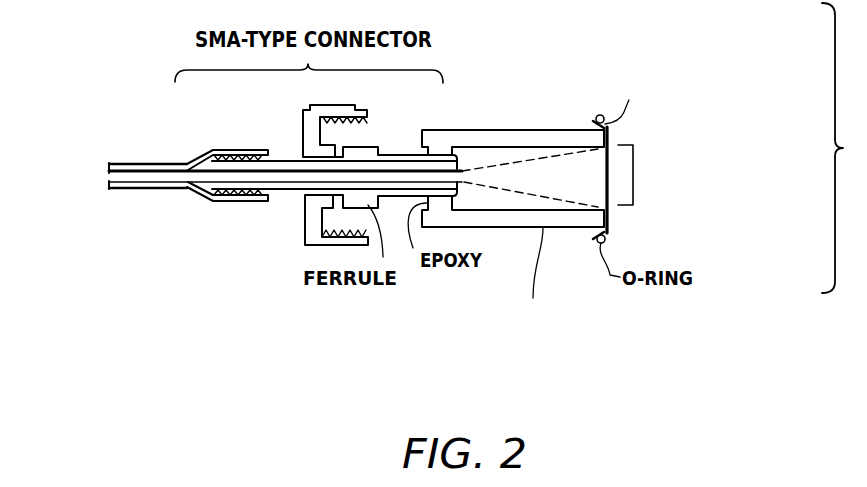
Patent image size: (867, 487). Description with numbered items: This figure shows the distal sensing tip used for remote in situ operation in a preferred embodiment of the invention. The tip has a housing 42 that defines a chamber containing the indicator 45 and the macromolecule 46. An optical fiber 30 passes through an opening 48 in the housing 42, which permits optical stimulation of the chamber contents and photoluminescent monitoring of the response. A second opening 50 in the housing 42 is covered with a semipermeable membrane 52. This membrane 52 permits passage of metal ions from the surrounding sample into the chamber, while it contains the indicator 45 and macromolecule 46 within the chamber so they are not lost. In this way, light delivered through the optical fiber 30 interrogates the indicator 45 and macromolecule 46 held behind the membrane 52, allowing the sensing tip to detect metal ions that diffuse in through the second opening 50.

The optical fiber 30 is at (150, 175).
The housing 42 is at (587, 113).
The indicator 45 is at (530, 166).
The macromolecule 46 is at (531, 185).
The opening 48 is at (478, 191).
The second opening 50 is at (633, 184).
The semipermeable membrane 52 is at (702, 156).